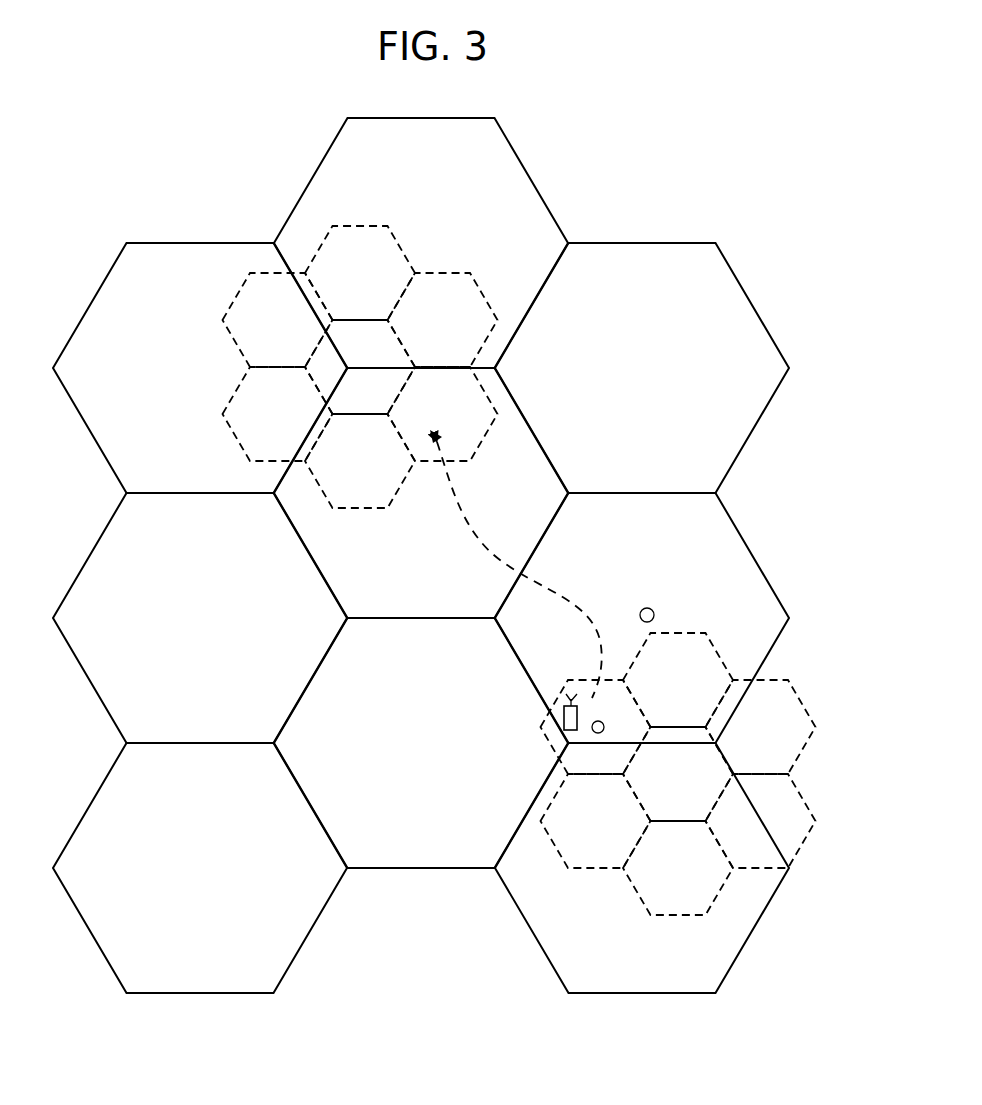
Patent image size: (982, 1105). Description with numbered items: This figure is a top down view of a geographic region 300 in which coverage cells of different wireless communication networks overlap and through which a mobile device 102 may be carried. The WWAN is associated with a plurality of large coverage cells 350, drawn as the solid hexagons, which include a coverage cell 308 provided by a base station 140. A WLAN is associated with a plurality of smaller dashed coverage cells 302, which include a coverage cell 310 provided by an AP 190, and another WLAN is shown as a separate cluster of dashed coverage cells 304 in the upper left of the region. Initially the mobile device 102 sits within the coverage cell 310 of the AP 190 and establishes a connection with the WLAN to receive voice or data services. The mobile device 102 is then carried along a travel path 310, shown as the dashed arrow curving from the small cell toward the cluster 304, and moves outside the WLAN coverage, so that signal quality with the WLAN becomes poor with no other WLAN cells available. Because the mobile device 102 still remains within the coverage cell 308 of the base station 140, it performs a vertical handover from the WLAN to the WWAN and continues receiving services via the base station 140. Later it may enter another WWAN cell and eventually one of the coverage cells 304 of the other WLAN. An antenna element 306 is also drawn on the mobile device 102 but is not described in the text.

The geographic region 300 is at (447, 994).
The coverage cells 350 is at (757, 268).
The coverage cell 308 is at (727, 504).
The coverage cells 304 is at (435, 252).
The coverage cells 302 is at (796, 665).
The coverage cell / travel path 310 is at (475, 533).
The base station 140 is at (652, 609).
The AP 190 is at (612, 712).
The mobile device 102 is at (562, 715).
The antenna of user equipment 306 is at (562, 700).